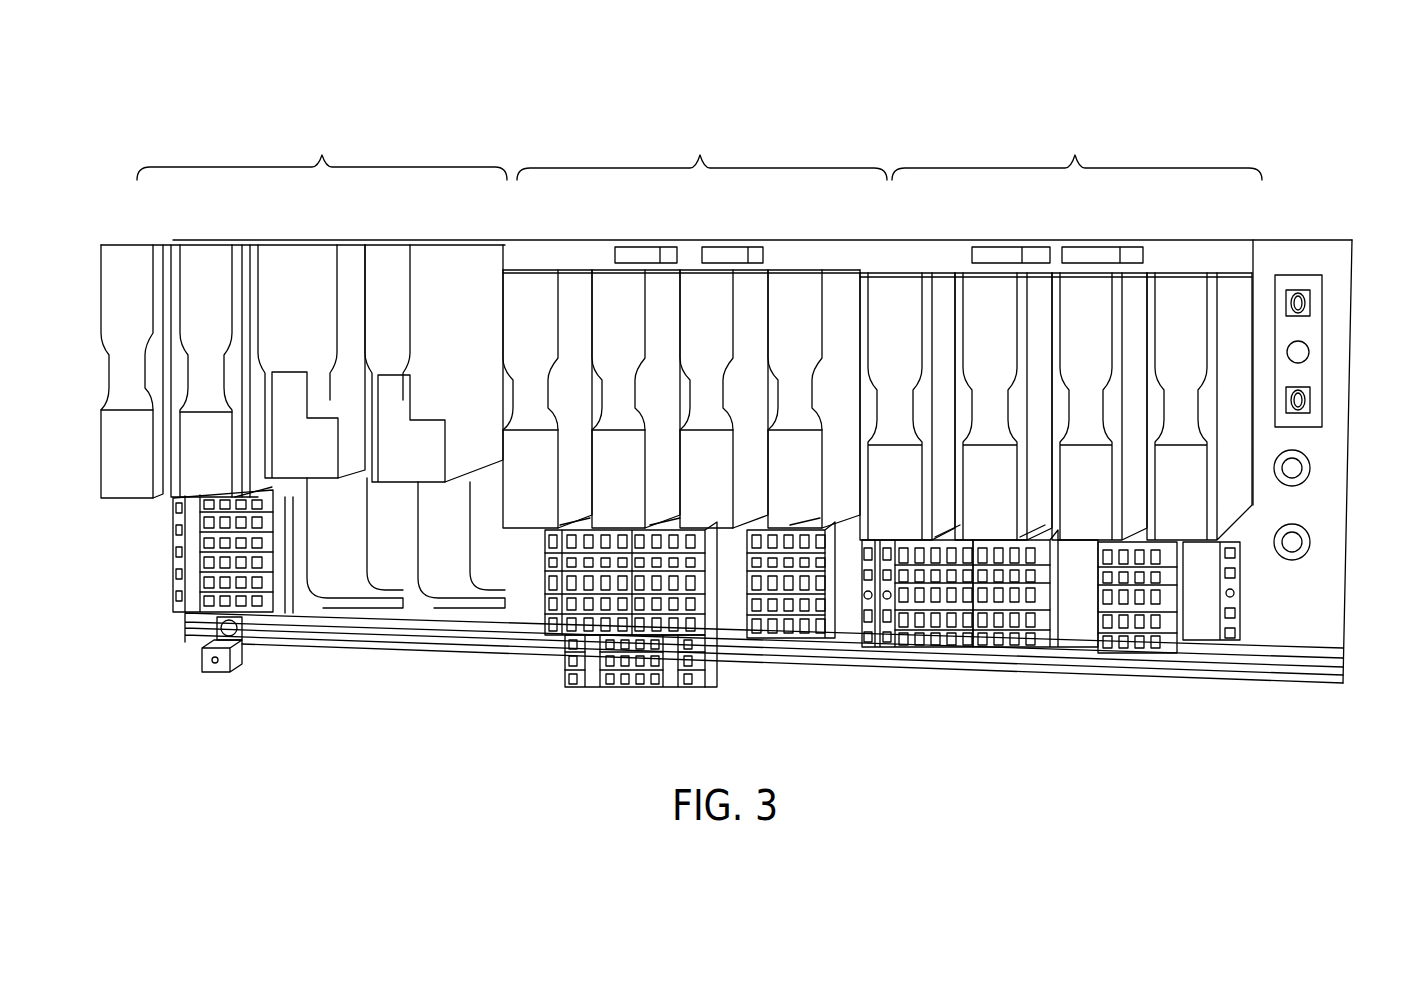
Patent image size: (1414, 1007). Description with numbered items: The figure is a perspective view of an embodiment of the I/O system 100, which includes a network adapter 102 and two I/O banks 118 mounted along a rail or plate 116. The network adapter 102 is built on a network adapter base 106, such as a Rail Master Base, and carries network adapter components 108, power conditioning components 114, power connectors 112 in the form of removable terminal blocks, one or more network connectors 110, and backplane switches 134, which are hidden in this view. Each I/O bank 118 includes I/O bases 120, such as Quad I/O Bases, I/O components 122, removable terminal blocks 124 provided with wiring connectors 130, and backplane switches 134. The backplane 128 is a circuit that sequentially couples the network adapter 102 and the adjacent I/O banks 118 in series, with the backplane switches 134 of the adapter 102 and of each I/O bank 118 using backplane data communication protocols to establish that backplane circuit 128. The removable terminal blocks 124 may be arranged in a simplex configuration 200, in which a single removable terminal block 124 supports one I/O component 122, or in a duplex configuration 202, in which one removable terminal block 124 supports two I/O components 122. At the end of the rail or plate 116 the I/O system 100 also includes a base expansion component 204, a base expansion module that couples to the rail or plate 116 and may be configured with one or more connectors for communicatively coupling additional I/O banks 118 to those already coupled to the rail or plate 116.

The I/O system 100 is at (108, 150).
The network adapter 102 is at (322, 150).
The network adapter base 106 is at (280, 242).
The network adapter components 108 is at (310, 262).
The network connectors 110 is at (348, 578).
The power connectors 112 is at (163, 525).
The power conditioning components 114 is at (197, 458).
The rail or plate 116 is at (1230, 675).
The I/O banks 118 is at (889, 151).
The I/O bases 120 is at (799, 231).
The I/O components 122 is at (514, 500).
The removable terminal blocks 124 is at (252, 538).
The backplane 128 is at (1366, 242).
The wiring connectors 130 is at (655, 630).
The backplane switches 134 is at (471, 285).
The simplex configuration 200 is at (612, 680).
The duplex configuration 202 is at (793, 632).
The base expansion component 204 is at (1300, 243).